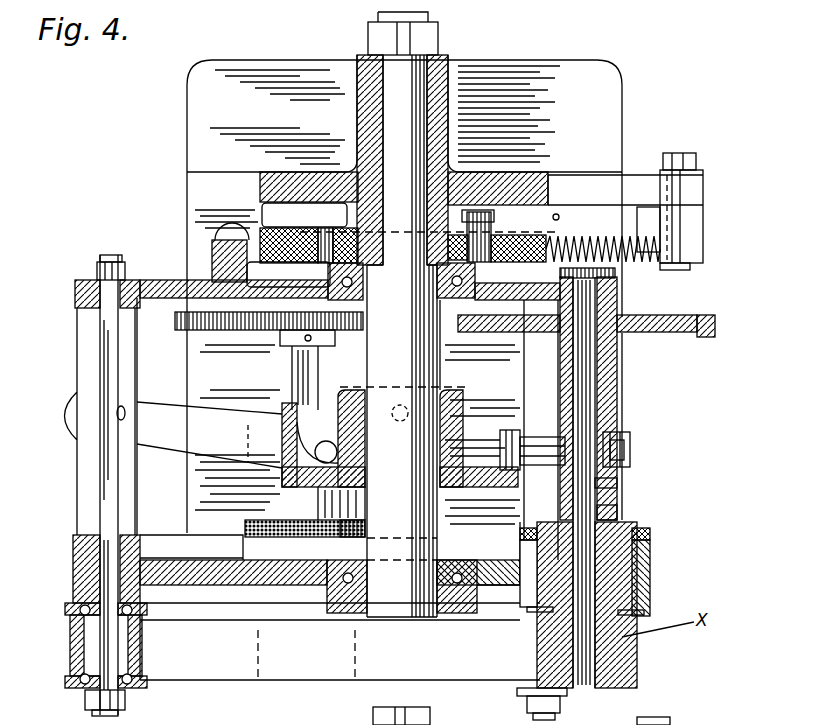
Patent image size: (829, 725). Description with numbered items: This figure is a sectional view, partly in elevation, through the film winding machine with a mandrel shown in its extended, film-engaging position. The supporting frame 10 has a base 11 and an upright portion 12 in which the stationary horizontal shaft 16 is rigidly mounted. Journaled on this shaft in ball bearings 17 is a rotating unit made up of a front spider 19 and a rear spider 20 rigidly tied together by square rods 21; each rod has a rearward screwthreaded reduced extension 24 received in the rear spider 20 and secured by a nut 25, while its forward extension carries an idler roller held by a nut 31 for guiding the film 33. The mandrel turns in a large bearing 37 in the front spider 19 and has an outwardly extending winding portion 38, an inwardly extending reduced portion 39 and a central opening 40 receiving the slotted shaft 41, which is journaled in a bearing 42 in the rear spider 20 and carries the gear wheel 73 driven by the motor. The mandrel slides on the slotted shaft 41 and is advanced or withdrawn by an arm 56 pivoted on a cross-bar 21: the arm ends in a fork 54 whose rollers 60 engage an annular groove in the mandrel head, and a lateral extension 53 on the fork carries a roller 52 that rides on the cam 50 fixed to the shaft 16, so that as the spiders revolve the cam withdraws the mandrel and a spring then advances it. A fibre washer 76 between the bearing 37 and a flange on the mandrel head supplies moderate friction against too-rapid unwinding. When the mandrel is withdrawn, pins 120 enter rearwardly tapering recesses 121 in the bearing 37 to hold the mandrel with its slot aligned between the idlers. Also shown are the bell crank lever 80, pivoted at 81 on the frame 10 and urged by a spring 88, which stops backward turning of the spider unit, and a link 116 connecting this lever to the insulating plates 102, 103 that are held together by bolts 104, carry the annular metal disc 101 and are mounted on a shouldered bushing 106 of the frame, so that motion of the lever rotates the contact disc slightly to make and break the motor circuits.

The supporting frame 10 is at (628, 183).
The base 11 is at (608, 92).
The upright portion 12 is at (450, 82).
The stationary horizontal shaft 16 is at (430, 336).
The ball bearings 17 is at (357, 292).
The front spider 19 is at (500, 607).
The rear spider 20 is at (530, 332).
The square rods 21 is at (130, 478).
The screwthreaded reduced extension 24 is at (77, 292).
The nut 25 is at (125, 270).
The nut 31 is at (125, 698).
The film 33 is at (213, 675).
The large bearing 37 is at (650, 556).
The winding portion 38 is at (630, 663).
The reduced portion 39 is at (602, 492).
The central opening 40 is at (600, 482).
The slotted shaft 41 is at (597, 385).
The bearing 42 is at (618, 300).
The cam 50 is at (282, 410).
The roller 52 is at (508, 430).
The lateral extension 53 is at (530, 437).
The fork 54 is at (630, 447).
The arm 56 is at (222, 425).
The rollers 60 is at (622, 436).
The gear wheel 73 is at (700, 317).
The fibre washer 76 is at (245, 528).
The bell crank lever 80 is at (615, 265).
The pivot 81 is at (690, 272).
The spring 88 is at (665, 230).
The annular metal disc 101 is at (258, 232).
The insulating plate 102 is at (258, 230).
The insulating plate 103 is at (263, 232).
The bolts 104 is at (288, 274).
The shouldered bushing 106 is at (304, 215).
The link 116 is at (496, 230).
The pins 120 is at (644, 612).
The tapering recesses 121 is at (640, 590).